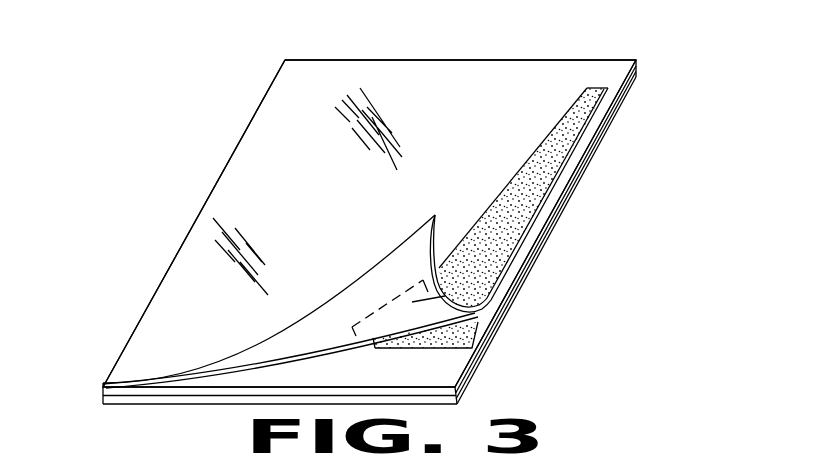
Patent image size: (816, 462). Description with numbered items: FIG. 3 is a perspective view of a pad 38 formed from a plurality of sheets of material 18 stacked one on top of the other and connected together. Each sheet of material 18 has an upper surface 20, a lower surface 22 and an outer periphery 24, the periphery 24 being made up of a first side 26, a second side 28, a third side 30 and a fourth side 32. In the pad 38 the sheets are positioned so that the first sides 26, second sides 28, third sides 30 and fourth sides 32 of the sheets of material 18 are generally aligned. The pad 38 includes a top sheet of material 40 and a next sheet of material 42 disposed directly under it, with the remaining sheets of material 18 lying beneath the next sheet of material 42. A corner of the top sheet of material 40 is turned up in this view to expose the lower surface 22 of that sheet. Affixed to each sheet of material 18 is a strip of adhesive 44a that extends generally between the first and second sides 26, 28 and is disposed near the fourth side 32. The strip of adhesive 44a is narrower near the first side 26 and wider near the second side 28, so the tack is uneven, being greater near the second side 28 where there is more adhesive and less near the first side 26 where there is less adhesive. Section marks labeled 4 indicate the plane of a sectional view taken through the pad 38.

The sheet of material 18 is at (614, 53).
The upper surface 20 is at (317, 70).
The lower surface 22 is at (272, 339).
The outer periphery 24 is at (142, 380).
The first side 26 is at (485, 60).
The second side 28 is at (370, 264).
The third side 30 is at (266, 90).
The fourth side 32 is at (607, 134).
The pad 38 is at (622, 117).
The top sheet of material 40 is at (587, 160).
The next sheet of material 42 is at (470, 367).
The strip of adhesive 44a is at (520, 188).
The section line for FIG. 4 is at (529, 113).